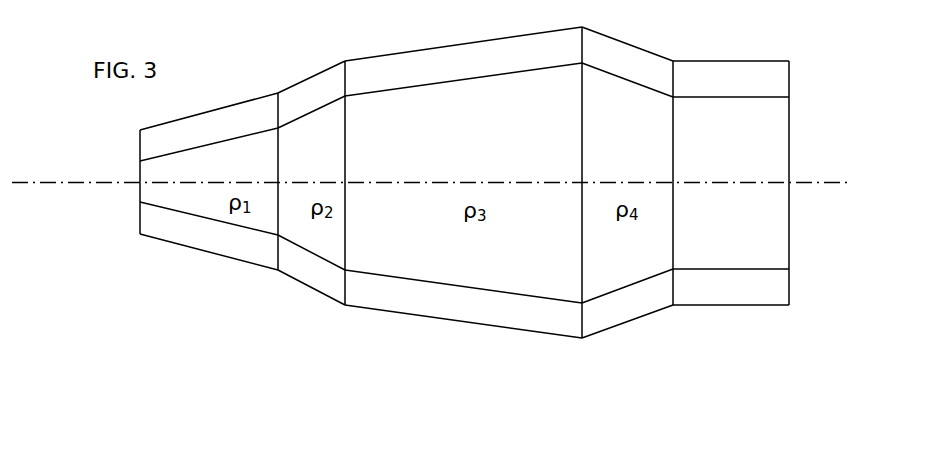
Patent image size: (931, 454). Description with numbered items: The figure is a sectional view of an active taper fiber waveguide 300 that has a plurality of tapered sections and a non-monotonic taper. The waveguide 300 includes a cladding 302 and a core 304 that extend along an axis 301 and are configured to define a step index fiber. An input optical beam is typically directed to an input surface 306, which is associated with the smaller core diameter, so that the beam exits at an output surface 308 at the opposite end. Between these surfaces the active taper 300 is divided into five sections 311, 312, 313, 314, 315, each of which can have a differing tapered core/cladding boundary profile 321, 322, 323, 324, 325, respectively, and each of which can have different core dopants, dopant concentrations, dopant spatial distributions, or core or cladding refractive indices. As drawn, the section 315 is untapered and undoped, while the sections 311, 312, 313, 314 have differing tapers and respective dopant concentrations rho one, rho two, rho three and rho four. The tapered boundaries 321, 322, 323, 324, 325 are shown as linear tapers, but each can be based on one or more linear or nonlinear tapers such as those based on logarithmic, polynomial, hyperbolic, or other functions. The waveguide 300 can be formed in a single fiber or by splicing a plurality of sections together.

The active taper fiber waveguide 300 is at (181, 397).
The axis 301 is at (84, 183).
The cladding 302 is at (427, 85).
The core 304 is at (148, 175).
The input surface 306 is at (140, 197).
The output surface 308 is at (790, 237).
The first section 311 is at (272, 285).
The second section 312 is at (342, 328).
The third section 313 is at (575, 371).
The fourth section 314 is at (676, 352).
The fifth section 315 is at (790, 319).
The tapered core/cladding boundary profile of first section 321 is at (152, 159).
The tapered core/cladding boundary profile of second section 322 is at (296, 120).
The tapered core/cladding boundary profile of third section 323 is at (391, 90).
The tapered core/cladding boundary profile of fourth section 324 is at (604, 73).
The core/cladding boundary profile of fifth section 325 is at (708, 97).